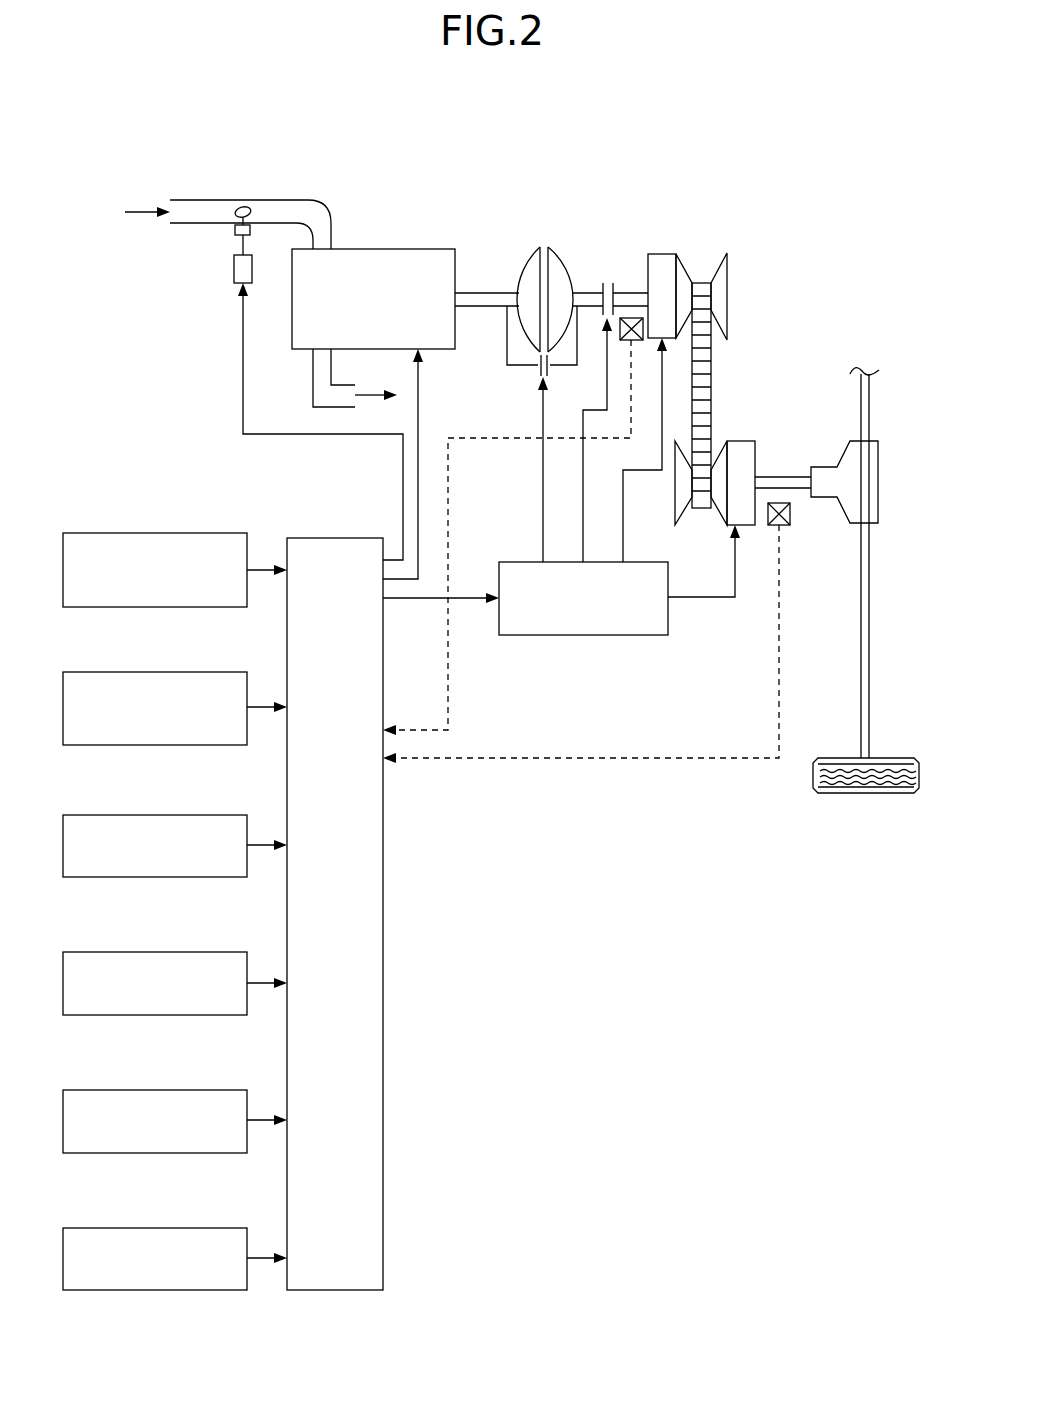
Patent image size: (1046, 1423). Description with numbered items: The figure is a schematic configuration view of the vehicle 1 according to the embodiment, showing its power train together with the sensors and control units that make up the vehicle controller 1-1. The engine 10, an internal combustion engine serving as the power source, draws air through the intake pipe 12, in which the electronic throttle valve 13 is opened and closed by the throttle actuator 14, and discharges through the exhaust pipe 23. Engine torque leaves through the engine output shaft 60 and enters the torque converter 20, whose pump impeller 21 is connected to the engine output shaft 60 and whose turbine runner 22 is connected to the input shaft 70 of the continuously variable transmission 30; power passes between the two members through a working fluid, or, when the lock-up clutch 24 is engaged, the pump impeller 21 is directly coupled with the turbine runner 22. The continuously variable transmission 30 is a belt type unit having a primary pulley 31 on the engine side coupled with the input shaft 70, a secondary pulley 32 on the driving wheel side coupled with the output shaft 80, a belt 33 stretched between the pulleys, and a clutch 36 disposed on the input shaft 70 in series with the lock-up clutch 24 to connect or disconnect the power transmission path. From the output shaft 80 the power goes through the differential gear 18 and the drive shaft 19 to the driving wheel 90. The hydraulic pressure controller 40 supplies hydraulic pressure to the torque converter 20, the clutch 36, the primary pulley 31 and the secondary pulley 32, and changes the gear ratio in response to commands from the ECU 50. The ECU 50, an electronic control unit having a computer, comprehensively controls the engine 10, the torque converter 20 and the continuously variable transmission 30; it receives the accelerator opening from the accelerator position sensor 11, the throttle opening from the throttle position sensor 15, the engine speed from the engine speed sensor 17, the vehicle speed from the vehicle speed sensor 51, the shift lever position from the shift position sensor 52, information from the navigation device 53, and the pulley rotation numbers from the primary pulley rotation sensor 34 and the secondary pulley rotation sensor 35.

The vehicle 1 is at (773, 136).
The vehicle controller 1-1 is at (503, 143).
The engine 10 is at (420, 248).
The accelerator position sensor 11 is at (204, 533).
The intake pipe 12 is at (307, 199).
The electronic throttle valve 13 is at (237, 214).
The throttle actuator 14 is at (233, 270).
The throttle position sensor 15 is at (221, 672).
The engine speed sensor 17 is at (225, 815).
The differential gear 18 is at (849, 462).
The drive shaft 19 is at (860, 602).
The torque converter 20 is at (552, 268).
The pump impeller 21 is at (528, 262).
The turbine runner 22 is at (562, 262).
The exhaust pipe 23 is at (313, 393).
The lock-up clutch 24 is at (527, 384).
The continuously variable transmission 30 is at (712, 363).
The primary pulley 31 is at (660, 262).
The secondary pulley 32 is at (742, 514).
The belt 33 is at (702, 396).
The primary pulley rotation sensor 34 is at (614, 332).
The secondary pulley rotation sensor 35 is at (792, 513).
The clutch 36 is at (616, 288).
The hydraulic pressure controller 40 is at (640, 636).
The ECU 50 is at (362, 538).
The vehicle speed sensor 51 is at (225, 952).
The shift position sensor 52 is at (225, 1090).
The navigation device 53 is at (225, 1228).
The engine output shaft 60 is at (480, 299).
The input shaft 70 is at (587, 299).
The output shaft 80 is at (793, 481).
The driving wheel 90 is at (839, 757).